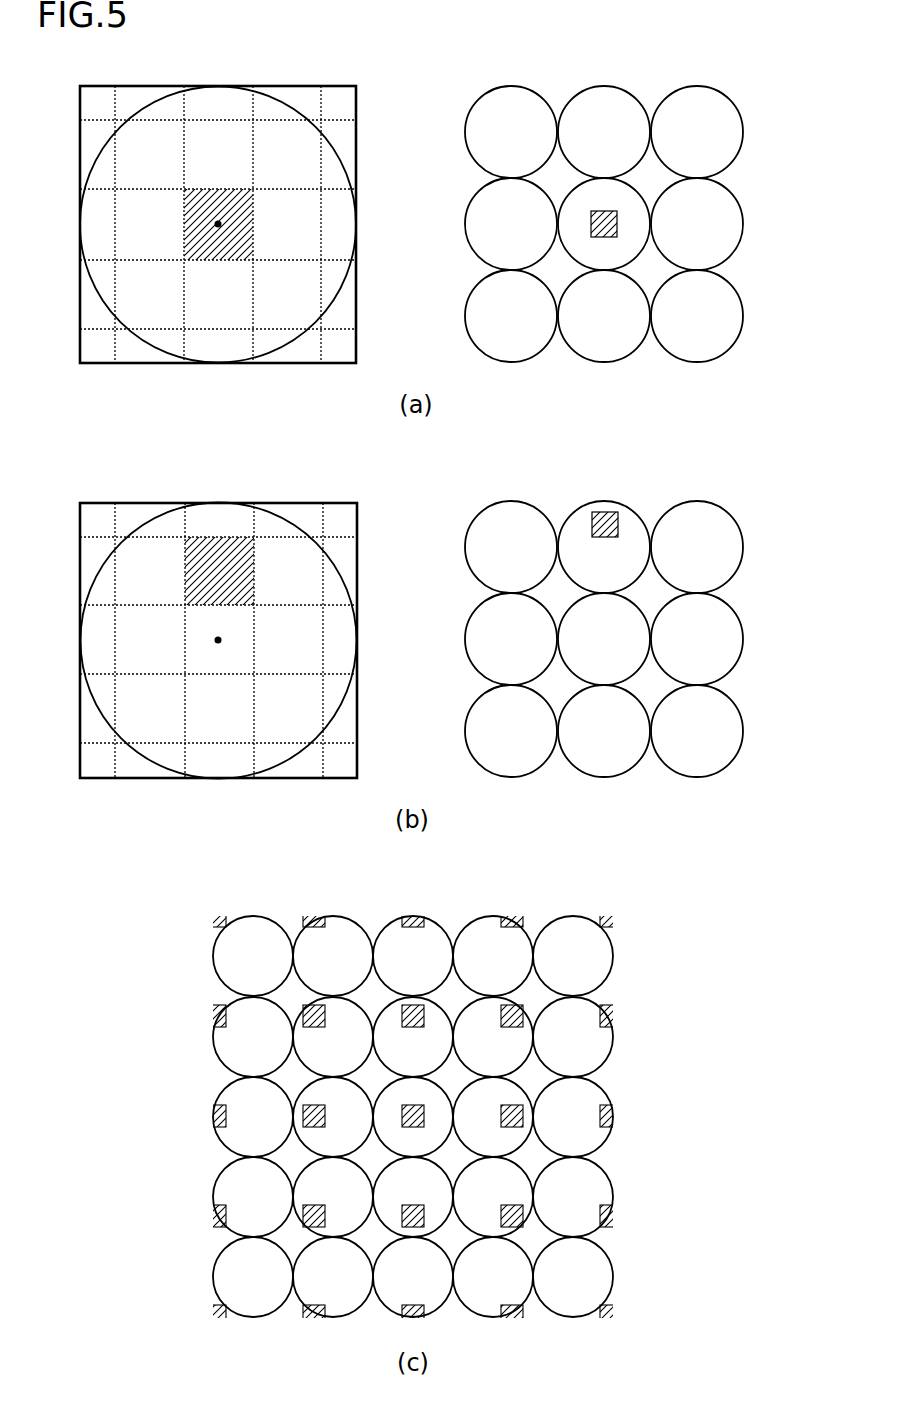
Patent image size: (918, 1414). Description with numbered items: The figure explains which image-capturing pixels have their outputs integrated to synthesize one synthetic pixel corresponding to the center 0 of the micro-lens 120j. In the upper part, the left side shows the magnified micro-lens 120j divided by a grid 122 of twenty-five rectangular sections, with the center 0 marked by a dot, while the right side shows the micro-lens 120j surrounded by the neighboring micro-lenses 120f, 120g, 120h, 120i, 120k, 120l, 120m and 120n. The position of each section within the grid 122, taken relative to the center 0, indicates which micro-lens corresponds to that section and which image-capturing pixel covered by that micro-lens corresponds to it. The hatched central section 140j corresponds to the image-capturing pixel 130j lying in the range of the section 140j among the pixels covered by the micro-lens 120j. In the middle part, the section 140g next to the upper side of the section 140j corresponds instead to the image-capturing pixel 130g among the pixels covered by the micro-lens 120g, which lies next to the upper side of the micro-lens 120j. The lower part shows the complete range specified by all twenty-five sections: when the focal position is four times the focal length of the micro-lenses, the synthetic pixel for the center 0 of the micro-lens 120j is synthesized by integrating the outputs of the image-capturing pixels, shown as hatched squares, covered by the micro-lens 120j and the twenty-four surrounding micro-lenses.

The micro-lens 120f is at (527, 85).
The micro-lens 120g is at (620, 85).
The micro-lens 120h is at (715, 90).
The micro-lens 120i is at (537, 187).
The micro-lens 120j is at (330, 142).
The micro-lens 120k is at (738, 207).
The micro-lens 120l is at (550, 353).
The micro-lens 120m is at (638, 347).
The micro-lens 120n is at (737, 343).
The grid 122 is at (355, 307).
The image-capturing pixel 130j is at (617, 223).
The image-capturing pixel 130g is at (617, 522).
The section 140j is at (245, 213).
The section 140g is at (240, 600).
The center 0 is at (218, 224).